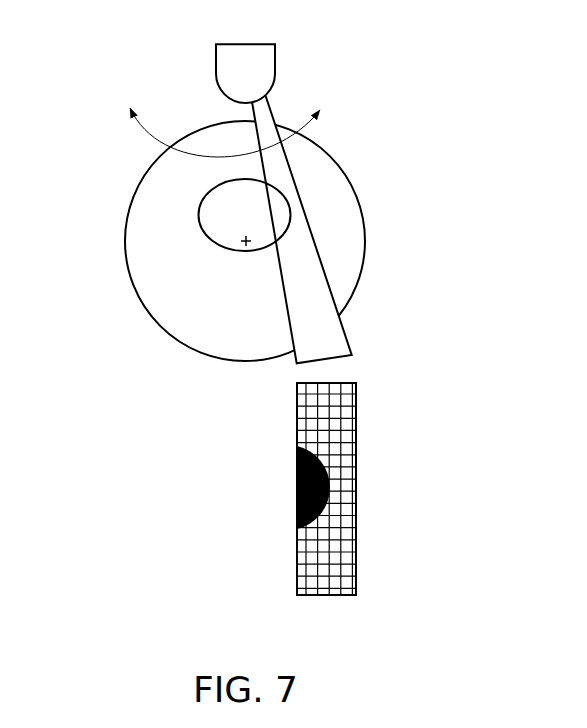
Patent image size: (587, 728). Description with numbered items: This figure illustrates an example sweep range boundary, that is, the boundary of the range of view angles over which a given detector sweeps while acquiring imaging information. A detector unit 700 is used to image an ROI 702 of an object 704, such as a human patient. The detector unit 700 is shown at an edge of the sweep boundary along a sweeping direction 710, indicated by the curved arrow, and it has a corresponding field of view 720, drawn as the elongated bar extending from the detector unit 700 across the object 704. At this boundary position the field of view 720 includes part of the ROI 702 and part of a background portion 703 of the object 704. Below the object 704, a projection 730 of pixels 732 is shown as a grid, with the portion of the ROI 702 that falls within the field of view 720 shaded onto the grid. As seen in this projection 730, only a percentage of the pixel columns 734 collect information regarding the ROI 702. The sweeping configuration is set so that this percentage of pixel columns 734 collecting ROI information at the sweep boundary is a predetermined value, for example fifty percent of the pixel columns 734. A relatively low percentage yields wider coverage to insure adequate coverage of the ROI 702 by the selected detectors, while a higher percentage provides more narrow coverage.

The detector unit 700 is at (246, 32).
The ROI 702 is at (198, 215).
The background portion 703 is at (200, 315).
The object 704 is at (125, 243).
The sweeping direction 710 is at (210, 155).
The field of view 720 is at (327, 363).
The projection 730 is at (388, 484).
The pixels 732 is at (356, 421).
The pixel columns 734 is at (303, 602).